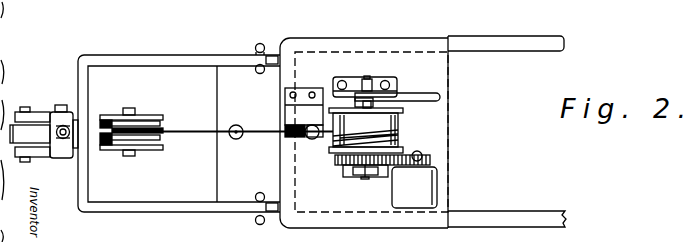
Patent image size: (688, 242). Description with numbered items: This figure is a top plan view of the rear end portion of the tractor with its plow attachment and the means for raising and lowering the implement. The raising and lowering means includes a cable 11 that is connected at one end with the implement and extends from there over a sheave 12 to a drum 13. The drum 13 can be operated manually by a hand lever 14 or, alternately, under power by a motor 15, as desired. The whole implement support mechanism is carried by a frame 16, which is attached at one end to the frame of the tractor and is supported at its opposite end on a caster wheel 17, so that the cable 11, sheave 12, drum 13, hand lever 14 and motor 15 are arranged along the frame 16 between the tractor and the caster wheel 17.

The cable 11 is at (208, 132).
The sheave 12 is at (166, 141).
The drum 13 is at (407, 118).
The hand lever 14 is at (440, 96).
The motor 15 is at (437, 197).
The frame 16 is at (81, 213).
The caster wheel 17 is at (38, 131).